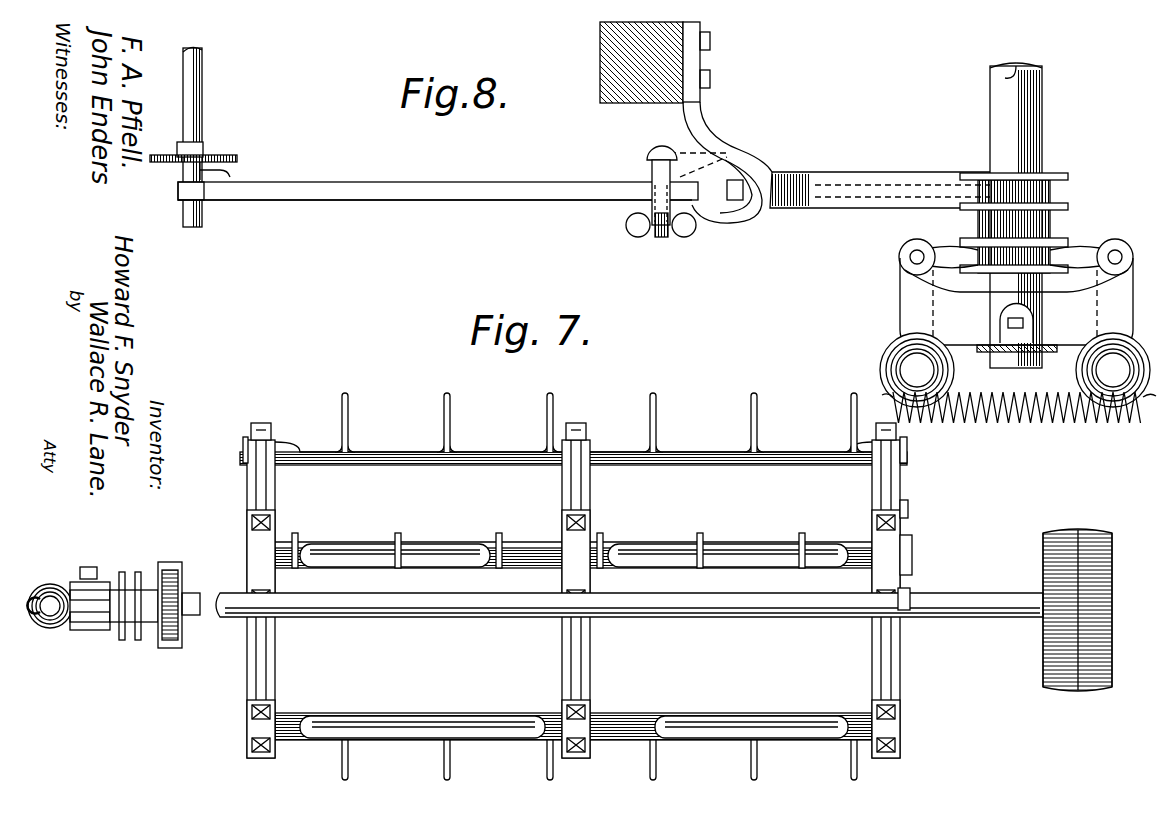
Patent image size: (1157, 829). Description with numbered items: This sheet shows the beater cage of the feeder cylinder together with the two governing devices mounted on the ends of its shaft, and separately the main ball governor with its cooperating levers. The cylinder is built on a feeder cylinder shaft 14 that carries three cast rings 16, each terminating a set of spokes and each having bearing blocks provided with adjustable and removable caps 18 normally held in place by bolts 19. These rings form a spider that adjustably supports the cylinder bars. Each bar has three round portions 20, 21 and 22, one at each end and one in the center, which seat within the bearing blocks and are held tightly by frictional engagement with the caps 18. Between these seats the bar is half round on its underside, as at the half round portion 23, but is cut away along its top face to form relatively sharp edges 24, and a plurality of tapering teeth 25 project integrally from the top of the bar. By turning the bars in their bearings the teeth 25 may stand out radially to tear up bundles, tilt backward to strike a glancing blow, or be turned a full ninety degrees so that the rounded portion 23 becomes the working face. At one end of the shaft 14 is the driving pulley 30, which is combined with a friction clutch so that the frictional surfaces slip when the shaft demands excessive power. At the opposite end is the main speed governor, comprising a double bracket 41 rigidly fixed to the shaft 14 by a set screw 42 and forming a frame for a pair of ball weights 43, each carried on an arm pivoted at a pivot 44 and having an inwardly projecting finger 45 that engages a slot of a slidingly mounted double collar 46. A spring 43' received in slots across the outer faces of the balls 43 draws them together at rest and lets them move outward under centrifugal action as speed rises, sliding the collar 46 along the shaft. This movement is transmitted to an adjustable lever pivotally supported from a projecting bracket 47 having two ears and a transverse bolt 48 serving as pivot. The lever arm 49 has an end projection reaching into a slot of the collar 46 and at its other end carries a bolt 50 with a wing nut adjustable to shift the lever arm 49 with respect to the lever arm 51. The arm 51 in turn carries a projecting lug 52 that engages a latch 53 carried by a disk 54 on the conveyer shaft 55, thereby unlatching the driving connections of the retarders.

In FIG. 8, the feeder cylinder shaft 14 is at (1037, 145).
In FIG. 7, the feeder cylinder shaft 14 is at (935, 598).
In FIG. 7, the cast ring 16 is at (262, 660).
In FIG. 7, the adjustable and removable cap 18 is at (885, 553).
In FIG. 7, the bolt 19 is at (888, 517).
In FIG. 7, the round portion 20 is at (285, 440).
In FIG. 7, the round portion 21 is at (603, 443).
In FIG. 7, the round portion 22 is at (862, 438).
In FIG. 7, the half round portion 23 is at (703, 466).
In FIG. 7, the sharp edge 24 is at (698, 442).
In FIG. 7, the tapering teeth 25 is at (657, 395).
In FIG. 7, the driving pulley 30 is at (1093, 540).
In FIG. 8, the double bracket 41 is at (1016, 305).
In FIG. 8, the set screw 42 is at (1007, 322).
In FIG. 8, the ball weight 43 is at (1015, 370).
In FIG. 8, the spring 43' is at (1019, 424).
In FIG. 8, the pivot 44 is at (1123, 245).
In FIG. 8, the inwardly projecting finger 45 is at (1077, 247).
In FIG. 8, the double collar 46 is at (1047, 225).
In FIG. 8, the projecting bracket 47 is at (705, 138).
In FIG. 8, the transverse bolt 48 is at (735, 194).
In FIG. 8, the lever arm 49 is at (843, 178).
In FIG. 8, the bolt 50 is at (652, 172).
In FIG. 8, the lever arm 51 is at (527, 192).
In FIG. 8, the projecting lug 52 is at (183, 180).
In FIG. 8, the latch 53 is at (212, 168).
In FIG. 8, the disk 54 is at (207, 153).
In FIG. 8, the conveyer shaft 55 is at (193, 107).